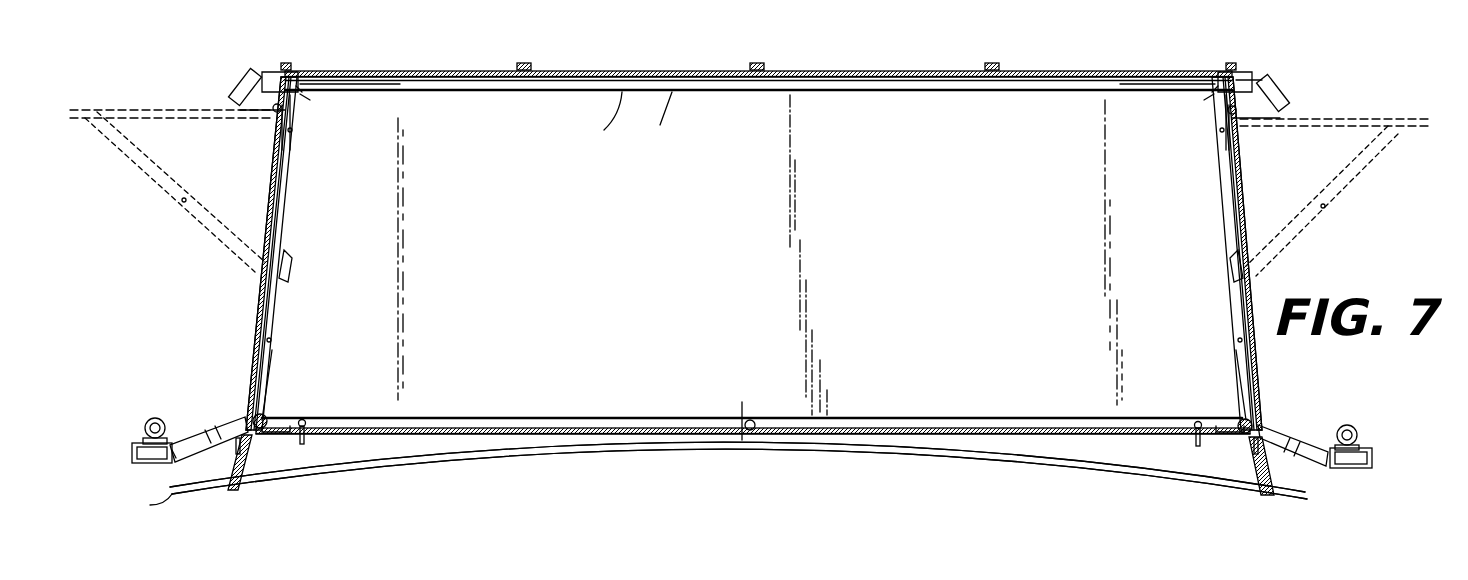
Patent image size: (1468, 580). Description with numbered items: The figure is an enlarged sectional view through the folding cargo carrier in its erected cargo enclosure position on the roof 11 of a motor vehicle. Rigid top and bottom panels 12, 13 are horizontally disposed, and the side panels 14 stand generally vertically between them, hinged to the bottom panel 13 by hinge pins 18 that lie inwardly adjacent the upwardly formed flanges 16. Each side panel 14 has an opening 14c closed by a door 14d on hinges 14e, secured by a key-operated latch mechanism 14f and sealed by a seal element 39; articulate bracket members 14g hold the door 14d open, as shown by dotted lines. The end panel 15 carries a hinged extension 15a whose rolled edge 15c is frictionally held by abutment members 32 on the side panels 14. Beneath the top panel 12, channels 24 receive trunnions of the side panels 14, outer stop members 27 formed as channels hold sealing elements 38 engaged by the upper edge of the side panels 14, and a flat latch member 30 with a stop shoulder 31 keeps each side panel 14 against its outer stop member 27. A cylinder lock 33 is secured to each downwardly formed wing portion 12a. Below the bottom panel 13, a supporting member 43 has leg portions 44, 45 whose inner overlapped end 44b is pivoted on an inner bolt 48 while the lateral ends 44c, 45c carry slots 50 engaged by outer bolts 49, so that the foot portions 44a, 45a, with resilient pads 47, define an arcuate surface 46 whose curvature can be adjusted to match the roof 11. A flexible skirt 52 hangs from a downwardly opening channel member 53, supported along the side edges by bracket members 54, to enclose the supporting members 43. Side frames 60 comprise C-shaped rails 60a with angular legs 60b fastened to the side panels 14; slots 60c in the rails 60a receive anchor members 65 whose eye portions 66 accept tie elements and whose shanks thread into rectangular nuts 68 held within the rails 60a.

The roof 11 is at (262, 253).
The top panel 12 is at (780, 78).
The angularly downwardly formed wing portion 12a is at (1310, 138).
The bottom panel 13 is at (548, 418).
The side panel 14 is at (250, 312).
The opening 14c is at (294, 130).
The door 14d is at (1360, 82).
The hinge 14e is at (1270, 150).
The latch mechanism 14f is at (268, 358).
The articulate bracket member 14g is at (1378, 216).
The end panel 15 is at (760, 255).
The extension 15a is at (659, 118).
The rolled edge 15c is at (601, 124).
The upwardly formed flange 16 is at (252, 418).
The hinge pin 18 is at (266, 418).
The channel 24 is at (1252, 82).
The outer stop member 27 is at (268, 72).
The latch member 30 is at (370, 85).
The stop shoulder 31 is at (300, 90).
The abutment member 32 is at (300, 92).
The cylinder lock 33 is at (232, 84).
The sealing element 38 is at (286, 64).
The seal element 39 is at (283, 125).
The supporting member 43 is at (430, 465).
The leg portion 44 is at (1108, 455).
The foot portion 44a is at (1030, 456).
The inner overlapped end 44b is at (739, 407).
The lateral end 44c is at (1245, 468).
The leg portion 45 is at (466, 455).
The foot portion 45a is at (517, 452).
The lateral end 45c is at (268, 465).
The arcuate surface 46 is at (583, 450).
The flexible resilient pad 47 is at (644, 449).
The inner bolt 48 is at (756, 422).
The outer bolt 49 is at (306, 420).
The slot 50 is at (306, 442).
The flexible resilient skirt 52 is at (230, 474).
The channel member 53 is at (225, 436).
The supporting bracket member 54 is at (262, 436).
The side frame 60 is at (132, 458).
The rail 60a is at (1370, 456).
The angularly extended leg 60b is at (1295, 440).
The slot 60c is at (1378, 430).
The anchor member 65 is at (152, 416).
The eye portion 66 is at (162, 420).
The nut 68 is at (152, 463).